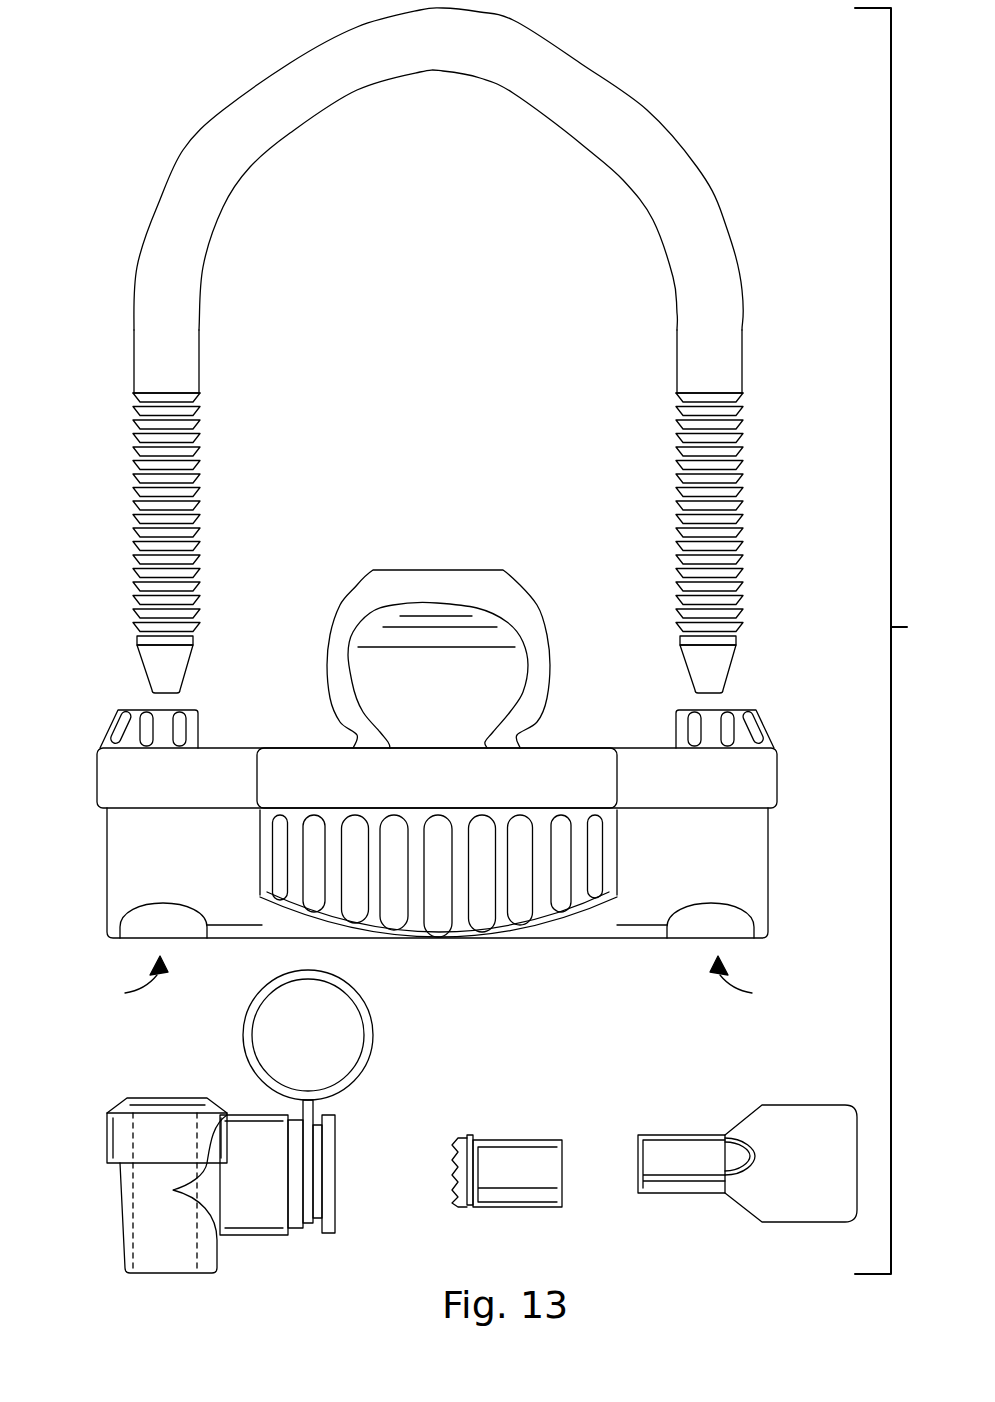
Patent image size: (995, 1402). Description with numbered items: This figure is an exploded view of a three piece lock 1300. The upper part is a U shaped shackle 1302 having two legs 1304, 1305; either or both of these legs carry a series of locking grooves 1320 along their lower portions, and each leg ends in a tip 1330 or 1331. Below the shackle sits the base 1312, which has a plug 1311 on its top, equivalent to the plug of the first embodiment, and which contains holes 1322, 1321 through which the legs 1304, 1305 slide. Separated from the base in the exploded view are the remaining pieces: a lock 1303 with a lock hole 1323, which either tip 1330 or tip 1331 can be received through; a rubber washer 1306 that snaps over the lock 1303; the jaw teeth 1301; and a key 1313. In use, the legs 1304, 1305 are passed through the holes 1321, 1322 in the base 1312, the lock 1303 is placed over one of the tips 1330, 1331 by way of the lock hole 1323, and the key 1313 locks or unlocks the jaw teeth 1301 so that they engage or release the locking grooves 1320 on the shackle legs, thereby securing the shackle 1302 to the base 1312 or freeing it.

The three piece lock 1300 is at (907, 641).
The jaw teeth 1301 is at (510, 1157).
The U shaped shackle 1302 is at (598, 101).
The lock 1303 is at (122, 1122).
The leg 1304 is at (720, 382).
The leg 1305 is at (148, 350).
The rubber washer 1306 is at (345, 1020).
The plug 1311 is at (515, 583).
The base 1312 is at (738, 866).
The key 1313 is at (780, 1118).
The locking grooves 1320 is at (695, 481).
The hole 1321 is at (119, 982).
The hole 1322 is at (759, 982).
The lock hole 1323 is at (198, 1232).
The tip 1330 is at (693, 662).
The tip 1331 is at (175, 670).